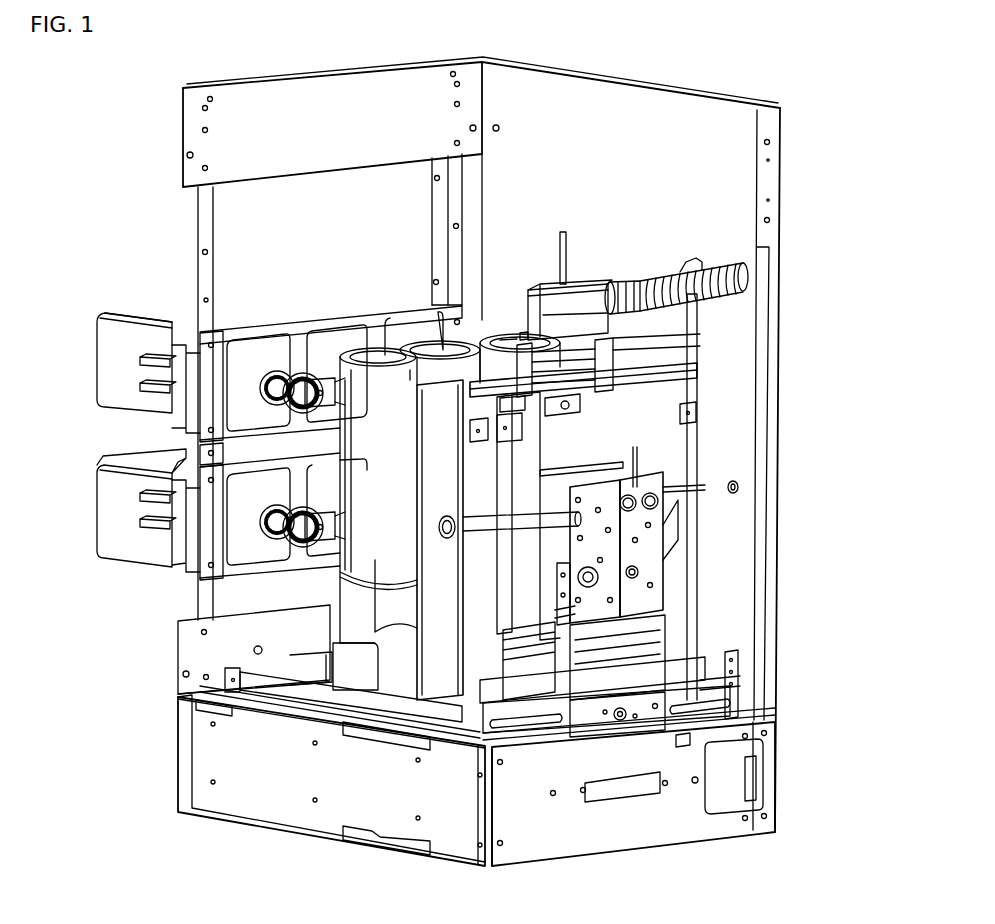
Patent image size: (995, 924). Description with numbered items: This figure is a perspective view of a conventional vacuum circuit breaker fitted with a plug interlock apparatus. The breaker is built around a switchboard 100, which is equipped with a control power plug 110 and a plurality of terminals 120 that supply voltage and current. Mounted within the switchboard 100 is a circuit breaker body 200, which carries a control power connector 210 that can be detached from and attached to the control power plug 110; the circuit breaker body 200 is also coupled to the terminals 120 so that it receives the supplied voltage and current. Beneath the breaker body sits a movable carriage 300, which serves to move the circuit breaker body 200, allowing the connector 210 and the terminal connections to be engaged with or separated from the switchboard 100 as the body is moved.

The switchboard 100 is at (213, 650).
The control power plug 110 is at (693, 258).
The terminal 120 is at (122, 355).
The circuit breaker body 200 is at (440, 673).
The control power connector 210 is at (667, 365).
The movable carriage 300 is at (343, 702).